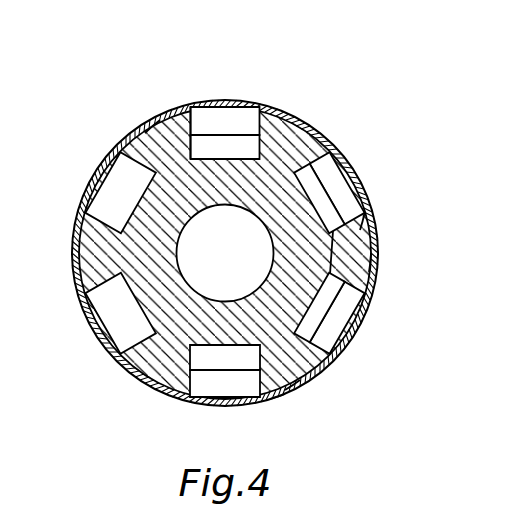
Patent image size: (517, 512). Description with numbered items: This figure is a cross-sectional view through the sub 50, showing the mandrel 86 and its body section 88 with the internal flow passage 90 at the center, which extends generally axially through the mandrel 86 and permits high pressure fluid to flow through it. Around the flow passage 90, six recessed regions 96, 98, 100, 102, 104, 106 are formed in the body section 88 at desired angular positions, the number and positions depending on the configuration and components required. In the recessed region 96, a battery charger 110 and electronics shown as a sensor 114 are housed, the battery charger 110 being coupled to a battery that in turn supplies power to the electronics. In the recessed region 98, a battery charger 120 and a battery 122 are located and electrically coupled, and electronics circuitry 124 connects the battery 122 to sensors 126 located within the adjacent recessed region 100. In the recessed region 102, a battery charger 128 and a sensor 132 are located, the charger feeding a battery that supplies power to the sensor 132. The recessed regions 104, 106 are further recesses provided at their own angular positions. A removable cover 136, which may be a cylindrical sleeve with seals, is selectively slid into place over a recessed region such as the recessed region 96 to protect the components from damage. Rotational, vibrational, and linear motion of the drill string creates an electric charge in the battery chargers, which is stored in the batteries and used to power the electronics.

The sub 50 is at (297, 90).
The mandrel 86 is at (285, 397).
The body section 88 is at (145, 133).
The internal flow passage 90 is at (178, 257).
The recessed region 96 is at (192, 131).
The recessed region 98 is at (347, 220).
The recessed region 100 is at (345, 306).
The recessed region 102 is at (217, 396).
The recessed region 104 is at (137, 343).
The recessed region 106 is at (131, 159).
The battery charger 110 is at (247, 117).
The sensor 114 is at (245, 145).
The battery charger 120 is at (333, 158).
The battery 122 is at (316, 206).
The electronics circuitry 124 is at (334, 243).
The sensors 126 is at (311, 318).
The battery charger 128 is at (212, 358).
The sensor 132 is at (300, 380).
The removable cover 136 is at (226, 106).